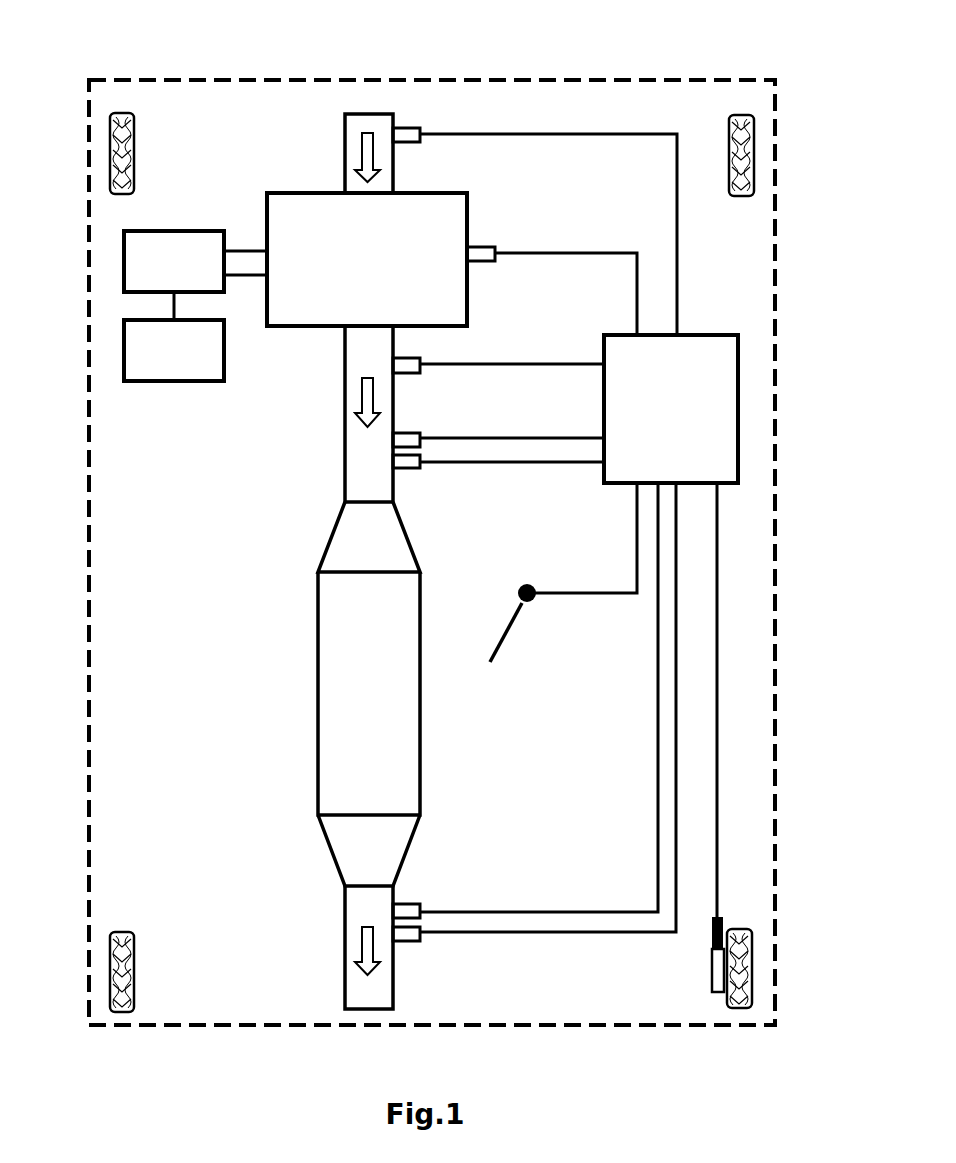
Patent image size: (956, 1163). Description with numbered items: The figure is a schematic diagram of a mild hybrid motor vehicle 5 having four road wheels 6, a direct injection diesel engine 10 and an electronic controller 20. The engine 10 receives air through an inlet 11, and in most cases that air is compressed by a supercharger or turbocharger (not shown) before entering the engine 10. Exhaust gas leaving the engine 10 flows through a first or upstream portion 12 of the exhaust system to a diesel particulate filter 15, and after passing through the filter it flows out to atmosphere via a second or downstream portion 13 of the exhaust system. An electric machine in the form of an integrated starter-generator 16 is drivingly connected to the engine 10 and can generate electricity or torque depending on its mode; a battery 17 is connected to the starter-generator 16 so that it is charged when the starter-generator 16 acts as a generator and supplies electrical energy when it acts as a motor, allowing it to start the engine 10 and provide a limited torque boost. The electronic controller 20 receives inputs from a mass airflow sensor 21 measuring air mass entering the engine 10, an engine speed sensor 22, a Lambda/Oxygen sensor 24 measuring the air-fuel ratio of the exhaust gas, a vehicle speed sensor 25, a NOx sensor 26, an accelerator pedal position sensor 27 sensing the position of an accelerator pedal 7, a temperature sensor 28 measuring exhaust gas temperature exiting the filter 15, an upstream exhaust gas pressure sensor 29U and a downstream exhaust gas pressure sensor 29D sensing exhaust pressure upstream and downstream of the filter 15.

The mild hybrid motor vehicle 5 is at (689, 68).
The road wheels 6 is at (110, 115).
The accelerator pedal 7 is at (510, 637).
The direct injection diesel engine 10 is at (352, 271).
The inlet 11 is at (343, 143).
The upstream portion of exhaust system 12 is at (343, 420).
The downstream portion of exhaust system 13 is at (344, 957).
The diesel particulate filter 15 is at (354, 682).
The integrated starter-generator 16 is at (159, 272).
The battery 17 is at (159, 360).
The electronic controller 20 is at (655, 409).
The mass airflow sensor 21 is at (408, 127).
The engine speed sensor 22 is at (475, 247).
The Lambda/Oxygen sensor 24 is at (407, 358).
The vehicle speed sensor 25 is at (712, 937).
The NOx sensor 26 is at (407, 433).
The accelerator pedal position sensor 27 is at (520, 588).
The temperature sensor 28 is at (407, 941).
The upstream exhaust gas pressure sensor 29U is at (407, 468).
The downstream exhaust gas pressure sensor 29D is at (407, 904).